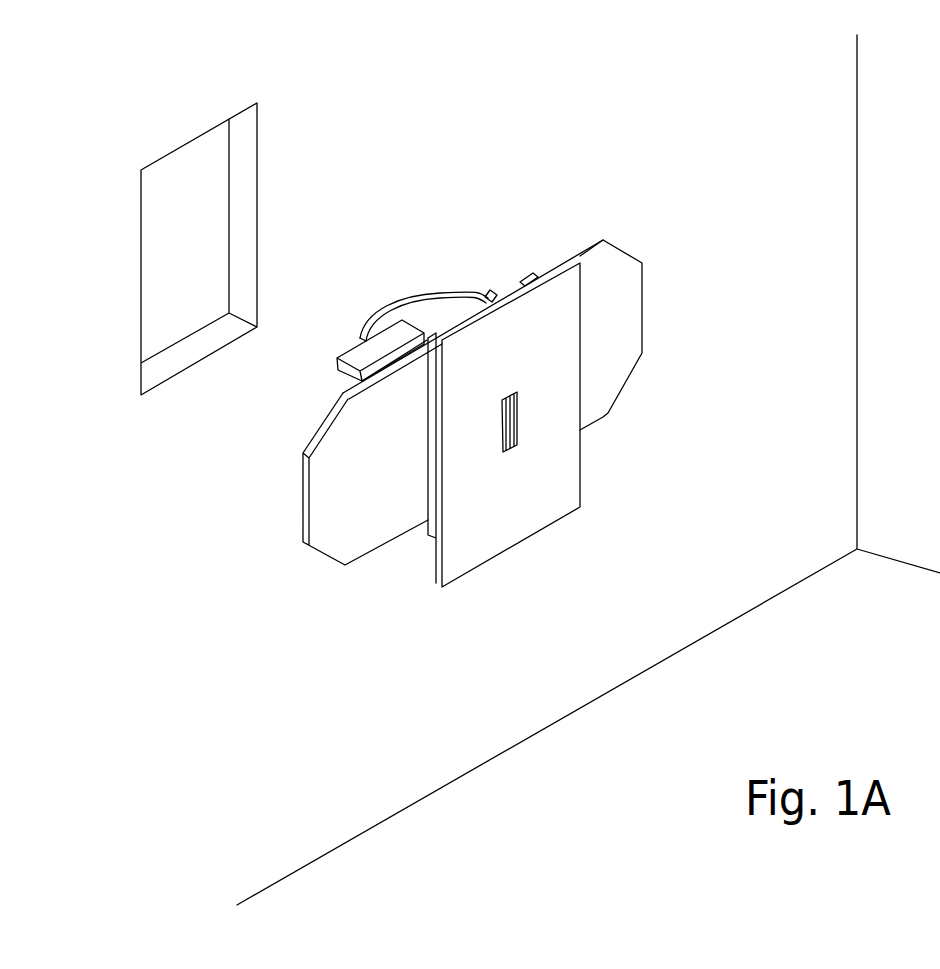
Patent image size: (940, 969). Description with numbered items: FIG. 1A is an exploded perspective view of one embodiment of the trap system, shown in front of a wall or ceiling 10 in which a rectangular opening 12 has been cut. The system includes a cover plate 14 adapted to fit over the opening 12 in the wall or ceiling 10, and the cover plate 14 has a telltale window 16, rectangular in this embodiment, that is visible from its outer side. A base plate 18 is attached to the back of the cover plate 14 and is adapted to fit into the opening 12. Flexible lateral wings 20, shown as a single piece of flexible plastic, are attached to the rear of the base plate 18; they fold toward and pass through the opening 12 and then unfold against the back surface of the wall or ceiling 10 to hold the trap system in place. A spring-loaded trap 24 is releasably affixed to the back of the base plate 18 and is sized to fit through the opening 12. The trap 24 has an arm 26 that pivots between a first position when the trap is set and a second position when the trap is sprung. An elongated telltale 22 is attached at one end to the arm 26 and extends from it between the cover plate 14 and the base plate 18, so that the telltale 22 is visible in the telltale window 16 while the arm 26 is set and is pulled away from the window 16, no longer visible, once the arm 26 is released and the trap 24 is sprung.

The wall or ceiling 10 is at (69, 337).
The opening 12 is at (248, 189).
The cover plate 14 is at (472, 553).
The telltale window 16 is at (518, 430).
The base plate 18 is at (428, 535).
The flexible lateral wings 20 is at (328, 560).
The elongated telltale 22 is at (437, 297).
The spring-loaded trap 24 is at (490, 290).
The arm 26 is at (342, 370).